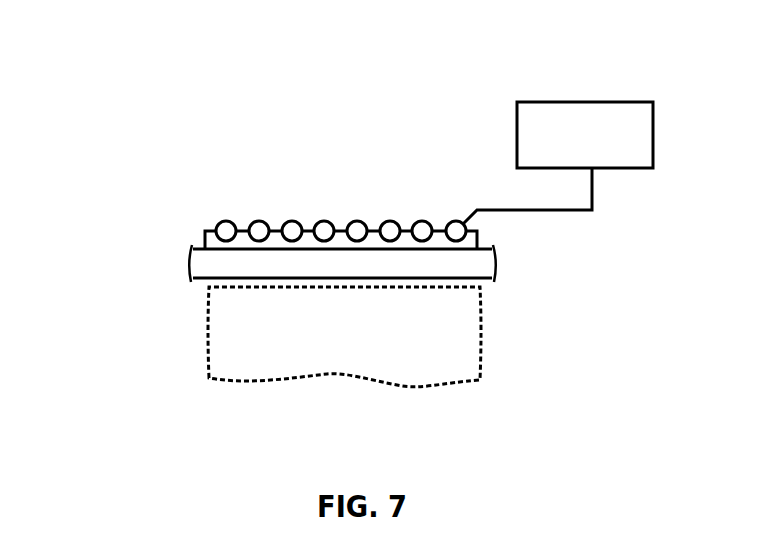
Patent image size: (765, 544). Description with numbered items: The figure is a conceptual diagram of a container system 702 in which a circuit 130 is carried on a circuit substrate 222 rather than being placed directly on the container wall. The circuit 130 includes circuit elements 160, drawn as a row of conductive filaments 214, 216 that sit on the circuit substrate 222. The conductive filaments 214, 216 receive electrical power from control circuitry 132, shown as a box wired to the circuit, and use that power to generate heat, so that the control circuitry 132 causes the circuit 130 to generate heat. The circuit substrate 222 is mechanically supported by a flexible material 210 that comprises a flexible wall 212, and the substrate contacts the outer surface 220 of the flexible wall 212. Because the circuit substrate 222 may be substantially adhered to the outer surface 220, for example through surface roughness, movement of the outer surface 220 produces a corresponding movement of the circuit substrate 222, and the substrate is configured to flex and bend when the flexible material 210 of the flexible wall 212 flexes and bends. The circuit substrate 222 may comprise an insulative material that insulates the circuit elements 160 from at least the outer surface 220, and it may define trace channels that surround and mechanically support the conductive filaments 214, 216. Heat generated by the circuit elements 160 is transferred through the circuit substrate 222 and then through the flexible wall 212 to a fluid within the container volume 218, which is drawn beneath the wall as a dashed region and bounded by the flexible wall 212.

The container system 702 is at (172, 85).
The circuit 130 is at (385, 115).
The control circuitry 132 is at (585, 135).
The conductive filament 214 is at (457, 227).
The circuit substrate 222 is at (203, 238).
The circuit elements 160 is at (358, 170).
The conductive filament 216 is at (358, 228).
The flexible wall 212 is at (182, 259).
The outer surface 220 is at (483, 234).
The flexible material 210 is at (468, 265).
The container volume 218 is at (344, 337).